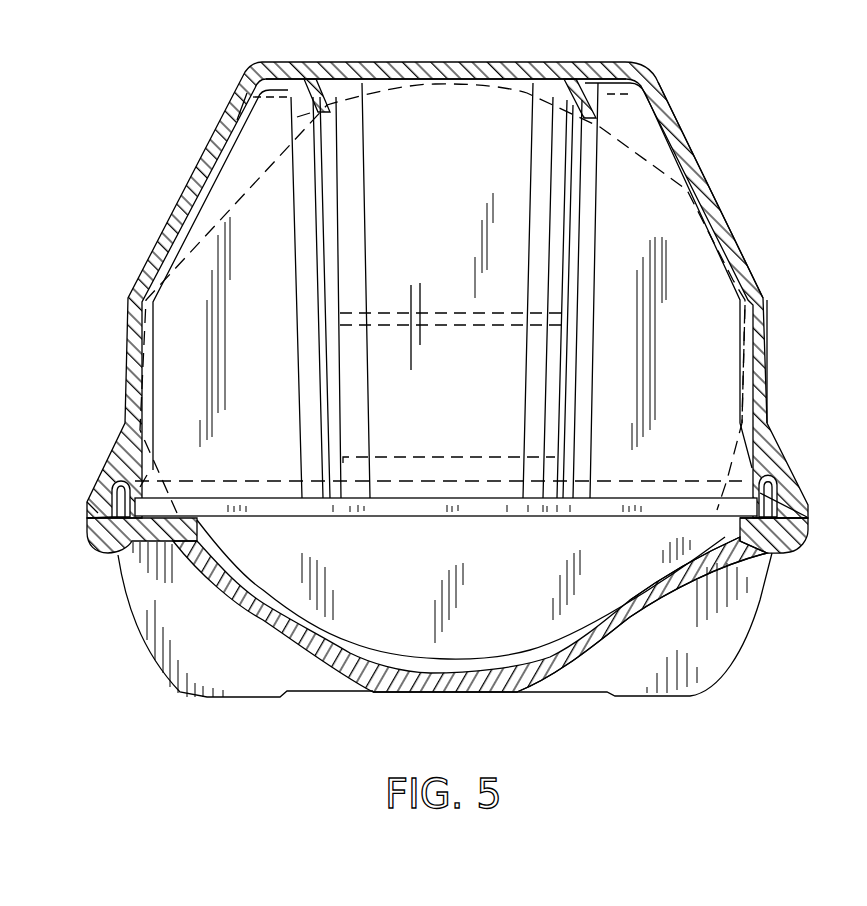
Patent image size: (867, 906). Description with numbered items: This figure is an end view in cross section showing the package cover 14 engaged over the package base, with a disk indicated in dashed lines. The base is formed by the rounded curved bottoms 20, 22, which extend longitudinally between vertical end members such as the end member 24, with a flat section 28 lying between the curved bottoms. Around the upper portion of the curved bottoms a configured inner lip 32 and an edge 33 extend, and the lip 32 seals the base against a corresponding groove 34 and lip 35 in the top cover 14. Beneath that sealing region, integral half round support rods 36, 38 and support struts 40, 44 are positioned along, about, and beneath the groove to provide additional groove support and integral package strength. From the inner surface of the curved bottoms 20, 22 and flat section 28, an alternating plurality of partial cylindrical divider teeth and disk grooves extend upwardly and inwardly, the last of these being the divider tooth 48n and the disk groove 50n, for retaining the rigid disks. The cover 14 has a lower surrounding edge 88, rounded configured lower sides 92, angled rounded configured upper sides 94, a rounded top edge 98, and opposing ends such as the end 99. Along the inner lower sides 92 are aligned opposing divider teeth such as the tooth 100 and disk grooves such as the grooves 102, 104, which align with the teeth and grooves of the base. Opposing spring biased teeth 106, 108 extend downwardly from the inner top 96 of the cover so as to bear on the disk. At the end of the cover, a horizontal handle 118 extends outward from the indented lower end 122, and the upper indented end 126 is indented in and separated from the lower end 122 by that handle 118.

The package cover 14 is at (750, 232).
The rounded curved bottom 20 is at (237, 553).
The rounded curved bottom 22 is at (685, 587).
The vertical end member 24 is at (395, 596).
The flat section 28 is at (456, 692).
The configured inner lip 32 is at (122, 503).
The edge 33 is at (808, 518).
The groove 34 is at (120, 487).
The lip 35 is at (150, 485).
The half round support rod 36 is at (90, 548).
The half round support rod 38 is at (798, 545).
The support strut 40 is at (163, 575).
The support strut 44 is at (738, 563).
The divider tooth 48n is at (240, 573).
The disk groove 50n is at (193, 540).
The lower surrounding edge 88 is at (808, 505).
The rounded configured lower side 92 is at (768, 383).
The angled rounded configured upper side 94 is at (697, 150).
The inner top 96 is at (400, 82).
The rounded top edge 98 is at (447, 62).
The opposing end 99 is at (273, 396).
The divider tooth 100 is at (737, 379).
The disk groove 102 is at (142, 408).
The disk groove 104 is at (752, 390).
The spring biased tooth 106 is at (317, 107).
The spring biased tooth 108 is at (574, 100).
The handle 118 is at (377, 313).
The indented lower end 122 is at (470, 396).
The upper indented end 126 is at (470, 184).